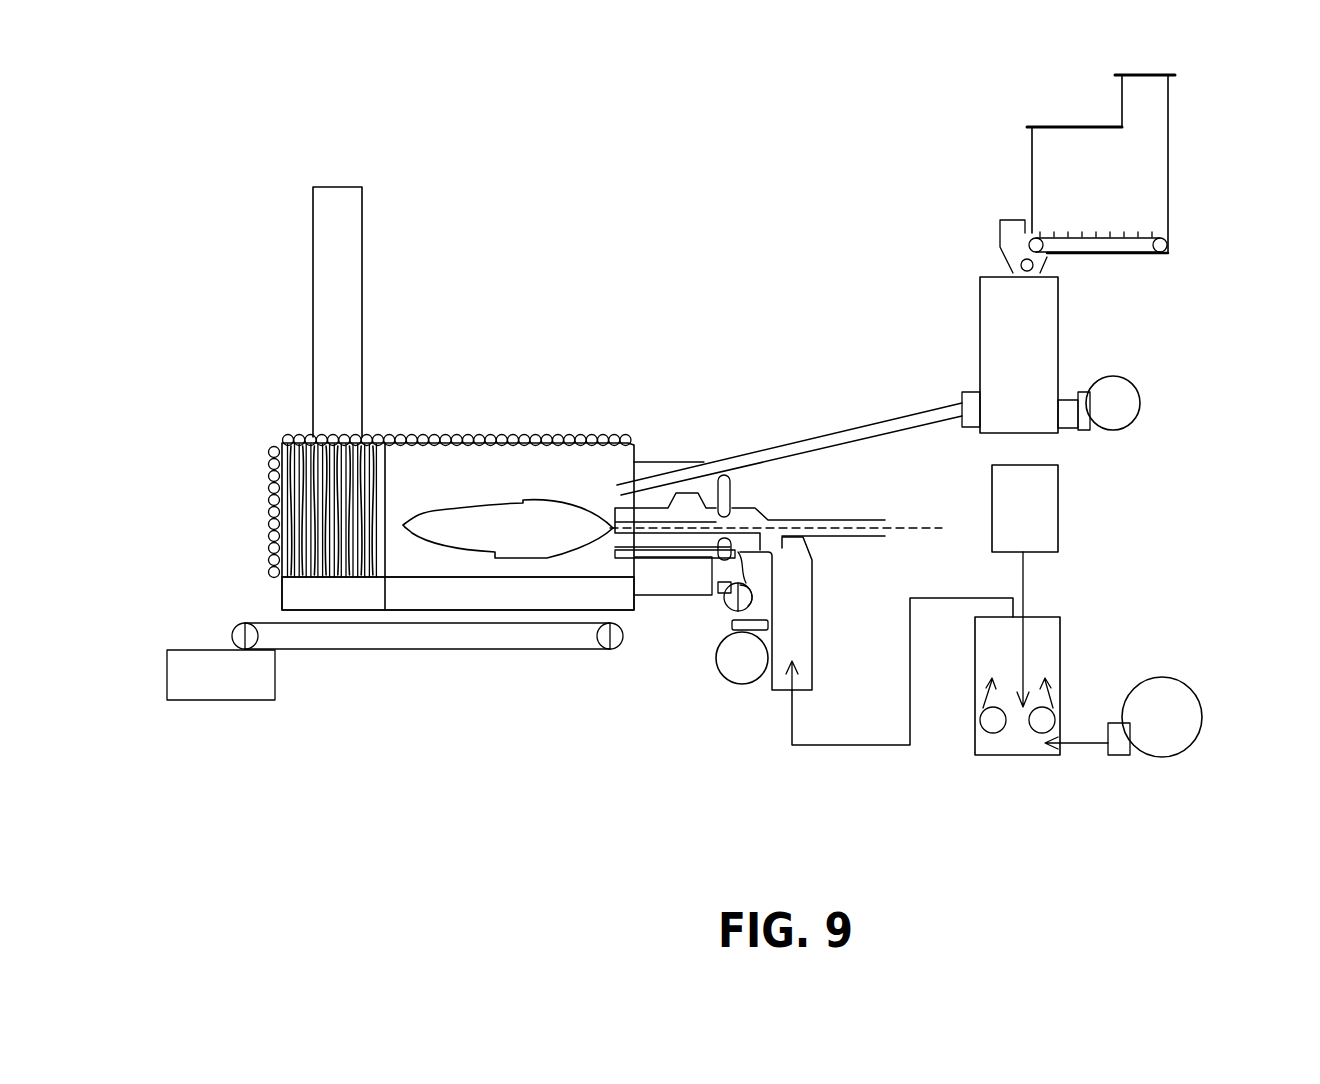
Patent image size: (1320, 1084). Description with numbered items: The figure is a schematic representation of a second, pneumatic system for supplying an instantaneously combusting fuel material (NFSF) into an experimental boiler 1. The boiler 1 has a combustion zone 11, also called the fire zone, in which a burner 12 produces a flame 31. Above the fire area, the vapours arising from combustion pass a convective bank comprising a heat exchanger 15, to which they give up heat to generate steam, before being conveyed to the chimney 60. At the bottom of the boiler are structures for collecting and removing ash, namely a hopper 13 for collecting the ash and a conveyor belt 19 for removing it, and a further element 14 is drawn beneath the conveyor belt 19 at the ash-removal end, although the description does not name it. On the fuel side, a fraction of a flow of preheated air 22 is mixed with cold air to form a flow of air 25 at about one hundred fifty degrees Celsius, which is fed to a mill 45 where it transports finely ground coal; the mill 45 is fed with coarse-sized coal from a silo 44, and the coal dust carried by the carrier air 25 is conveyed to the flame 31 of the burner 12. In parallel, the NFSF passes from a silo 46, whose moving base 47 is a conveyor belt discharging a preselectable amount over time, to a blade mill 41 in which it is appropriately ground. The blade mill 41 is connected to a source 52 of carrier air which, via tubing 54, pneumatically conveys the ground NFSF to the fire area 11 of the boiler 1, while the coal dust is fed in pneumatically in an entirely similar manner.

The boiler 1 is at (430, 400).
The combustion zone 11 is at (583, 481).
The burner 12 is at (788, 508).
The hopper 13 is at (420, 598).
The ash container 14 is at (219, 683).
The heat exchanger 15 is at (316, 507).
The conveyor belt 19 is at (421, 633).
The flow of preheated air 22 is at (735, 660).
The flow of air 25 is at (846, 746).
The flame 31 is at (500, 522).
The blade mill 41 is at (1040, 345).
The silo 44 is at (1042, 515).
The mill 45 is at (1043, 650).
The silo 46 is at (1145, 177).
The moving base 47 is at (1140, 246).
The source of carrier air 52 is at (1115, 408).
The tubing 54 is at (836, 440).
The chimney 60 is at (332, 291).